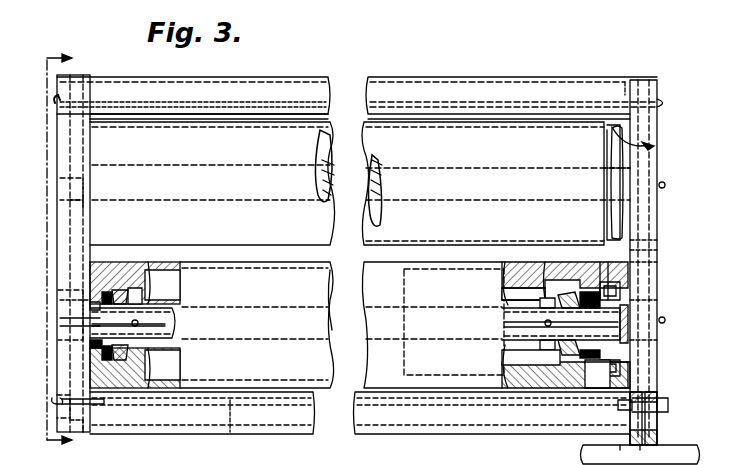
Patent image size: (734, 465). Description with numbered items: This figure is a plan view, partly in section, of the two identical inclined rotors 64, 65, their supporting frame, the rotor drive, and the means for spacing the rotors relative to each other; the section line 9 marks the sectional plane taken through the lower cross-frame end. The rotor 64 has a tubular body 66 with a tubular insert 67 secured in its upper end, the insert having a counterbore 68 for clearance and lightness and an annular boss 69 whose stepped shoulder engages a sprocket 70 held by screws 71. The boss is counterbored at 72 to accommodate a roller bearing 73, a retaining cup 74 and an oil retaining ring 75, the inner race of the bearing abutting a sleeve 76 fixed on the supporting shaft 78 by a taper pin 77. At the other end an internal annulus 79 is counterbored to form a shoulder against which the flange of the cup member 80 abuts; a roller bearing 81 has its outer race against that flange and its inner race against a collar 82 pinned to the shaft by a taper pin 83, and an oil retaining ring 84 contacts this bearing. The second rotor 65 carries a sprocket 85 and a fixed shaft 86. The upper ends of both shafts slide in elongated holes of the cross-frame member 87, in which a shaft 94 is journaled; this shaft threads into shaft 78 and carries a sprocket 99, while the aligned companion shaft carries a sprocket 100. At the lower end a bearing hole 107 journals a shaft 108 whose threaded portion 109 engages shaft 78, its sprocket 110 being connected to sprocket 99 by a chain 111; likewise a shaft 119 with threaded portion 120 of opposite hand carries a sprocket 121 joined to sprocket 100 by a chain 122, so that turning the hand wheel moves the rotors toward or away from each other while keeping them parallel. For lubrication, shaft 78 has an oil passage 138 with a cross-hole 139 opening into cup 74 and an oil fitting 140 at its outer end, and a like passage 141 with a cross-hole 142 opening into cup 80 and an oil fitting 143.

The section line 9- 9 is at (66, 251).
The inclined rotor 64 is at (314, 420).
The inclined rotor 65 is at (255, 130).
The tubular body 66 is at (332, 270).
The tubular insert 67 is at (585, 262).
The counterbore 68 is at (515, 280).
The annular boss 69 is at (615, 275).
The sprocket 70 is at (630, 265).
The screws 71 is at (620, 290).
The counterbore 72 is at (610, 375).
The roller bearing 73 is at (570, 365).
The retaining cup 74 is at (545, 300).
The oil retaining ring 75 is at (592, 296).
The sleeve 76 is at (658, 345).
The taper pin 77 is at (565, 324).
The fixed supporting shaft 78 is at (520, 355).
The internal annulus 79 is at (130, 262).
The cup member 80 is at (142, 290).
The roller bearing 81 is at (140, 300).
The collar 82 is at (95, 345).
The taper pin 83 is at (95, 343).
The oil retaining ring 84 is at (103, 292).
The sprocket 85 is at (617, 153).
The fixed shaft 86 is at (372, 170).
The cross-frame member 87 is at (653, 146).
The shaft 94 is at (650, 378).
The sprocket 99 is at (670, 405).
The sprocket 100 is at (665, 104).
The bearing hole 107 is at (85, 432).
The shaft 108 is at (72, 380).
The threaded portion 109 is at (70, 300).
The sprocket 110 is at (56, 402).
The chain 111 is at (445, 405).
The shaft 119 is at (72, 143).
The threaded portion 120 is at (72, 208).
The sprocket 121 is at (58, 100).
The chain 122 is at (152, 100).
The oil passage 138 is at (660, 310).
The cross-hole 139 is at (545, 323).
The oil fitting 140 is at (665, 186).
The oil passage 141 is at (88, 318).
The cross-hole 142 is at (160, 324).
The oil fitting 143 is at (58, 178).